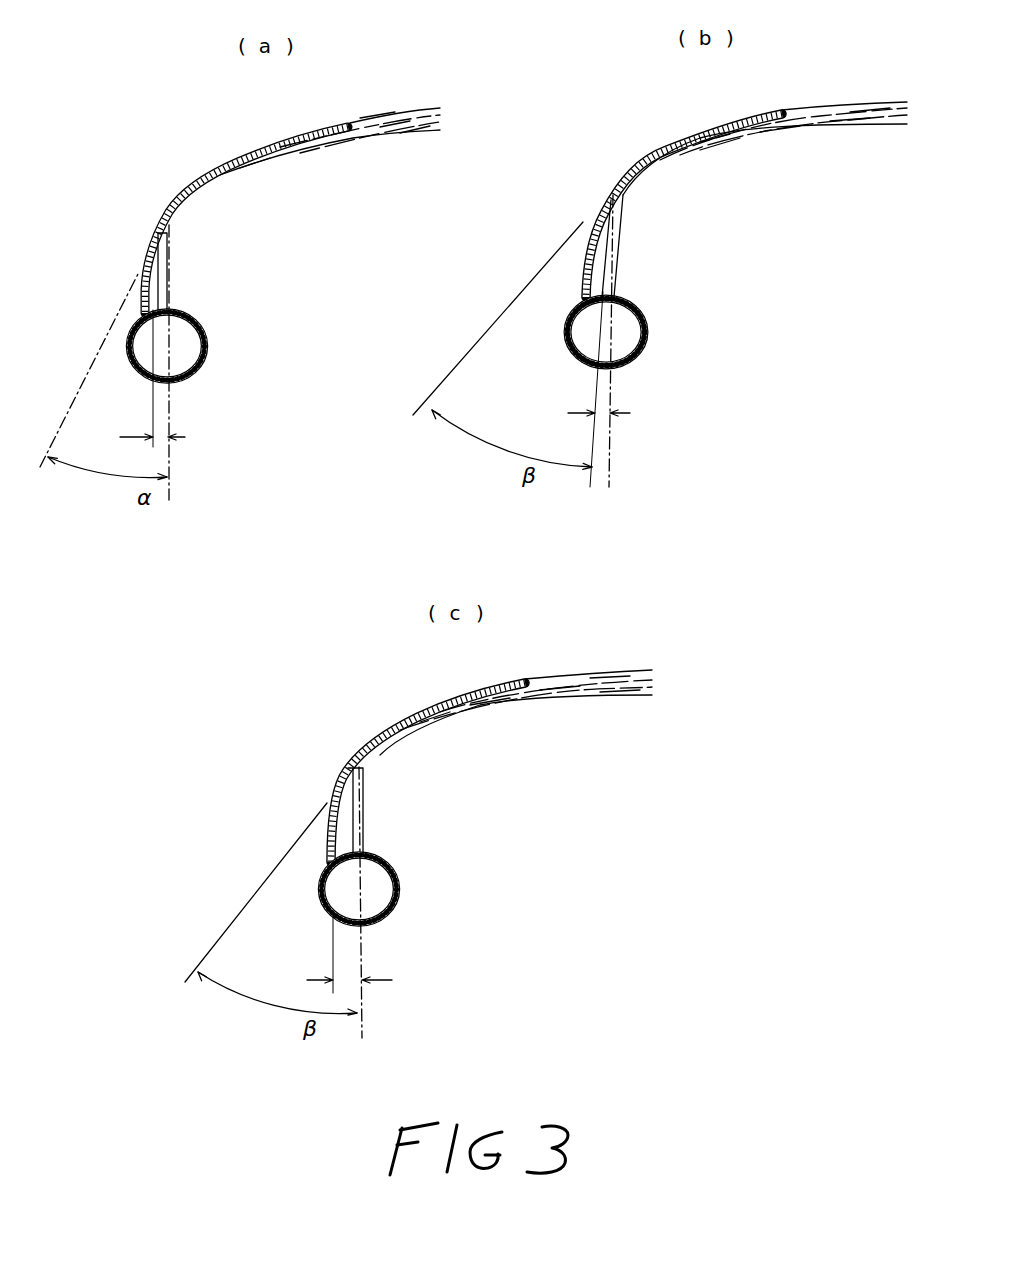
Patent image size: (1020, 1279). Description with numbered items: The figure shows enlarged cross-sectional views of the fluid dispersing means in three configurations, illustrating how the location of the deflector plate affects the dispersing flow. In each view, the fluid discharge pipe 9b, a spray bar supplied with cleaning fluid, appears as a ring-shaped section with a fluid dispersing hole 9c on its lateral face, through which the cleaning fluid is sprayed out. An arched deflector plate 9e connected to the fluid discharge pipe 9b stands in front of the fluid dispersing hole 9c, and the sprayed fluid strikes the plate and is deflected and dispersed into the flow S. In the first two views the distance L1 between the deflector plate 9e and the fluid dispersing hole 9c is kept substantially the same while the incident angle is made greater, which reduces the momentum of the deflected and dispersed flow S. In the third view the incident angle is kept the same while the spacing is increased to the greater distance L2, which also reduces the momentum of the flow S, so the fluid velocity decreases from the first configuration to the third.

The deflector plate 9e is at (210, 168).
The fluid discharge pipe 9b is at (207, 357).
The fluid dispersing hole 9c is at (168, 309).
The deflected and dispersed flow S is at (415, 128).
The distance between the deflector plate and the fluid discharge opening L1 is at (392, 426).
The distance between the deflector plate and the dispersing hole L2 is at (368, 980).